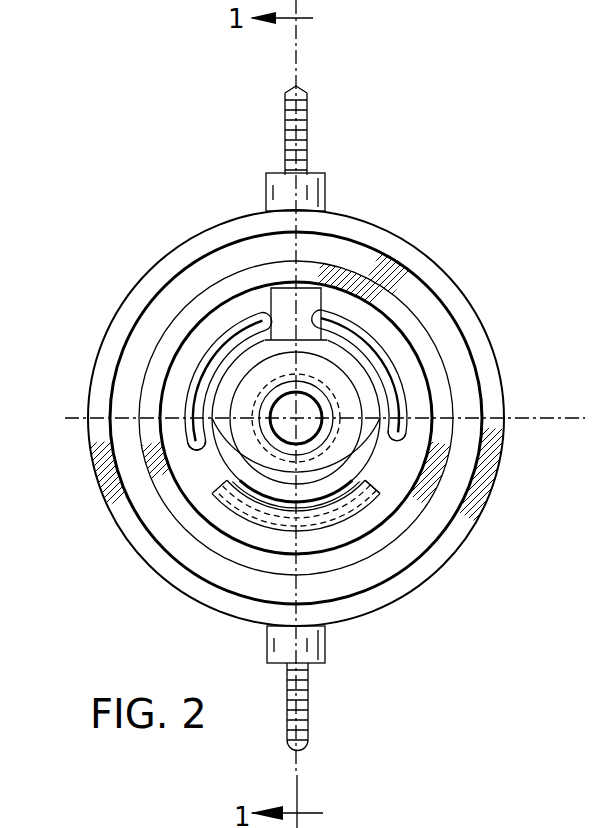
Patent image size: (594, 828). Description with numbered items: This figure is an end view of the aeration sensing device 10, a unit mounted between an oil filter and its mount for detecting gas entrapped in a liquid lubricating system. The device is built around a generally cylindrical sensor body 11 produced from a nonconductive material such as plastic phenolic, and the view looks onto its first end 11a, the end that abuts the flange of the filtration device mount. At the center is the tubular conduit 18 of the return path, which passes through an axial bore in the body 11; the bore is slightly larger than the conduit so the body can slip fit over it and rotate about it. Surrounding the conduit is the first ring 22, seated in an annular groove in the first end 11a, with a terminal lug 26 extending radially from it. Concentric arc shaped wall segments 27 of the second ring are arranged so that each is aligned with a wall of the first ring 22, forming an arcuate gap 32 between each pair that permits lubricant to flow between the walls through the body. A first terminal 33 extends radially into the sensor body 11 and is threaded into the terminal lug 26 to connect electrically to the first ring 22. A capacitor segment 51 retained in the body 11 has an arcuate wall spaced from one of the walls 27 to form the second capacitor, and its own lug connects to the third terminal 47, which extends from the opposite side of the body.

The aeration sensing device 10 is at (480, 136).
The sensor body 11 is at (495, 328).
The first end 11a is at (492, 386).
The tubular conduit 18 is at (253, 457).
The first ring 22 is at (382, 464).
The terminal lug 26 is at (312, 305).
The wall segments 27 is at (237, 330).
The gap 32 is at (213, 360).
The first terminal 33 is at (307, 120).
The third terminal 47 is at (308, 715).
The capacitor segment 51 is at (225, 507).